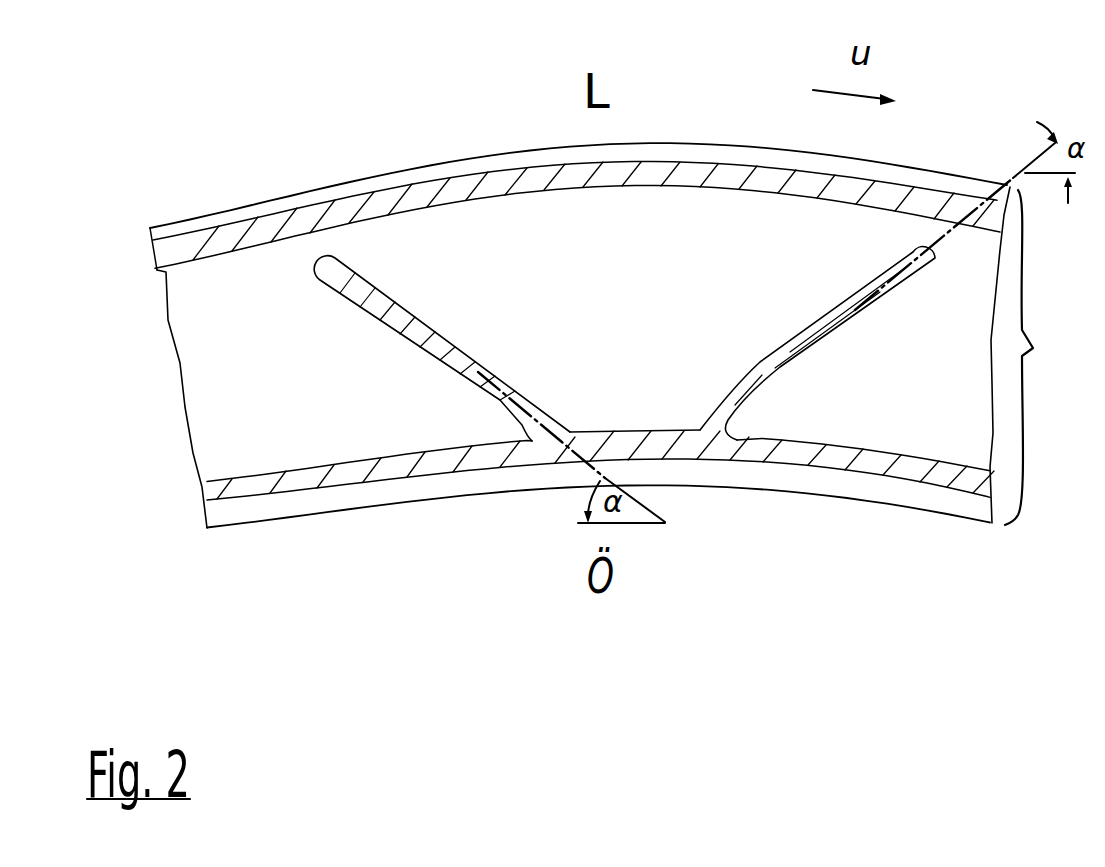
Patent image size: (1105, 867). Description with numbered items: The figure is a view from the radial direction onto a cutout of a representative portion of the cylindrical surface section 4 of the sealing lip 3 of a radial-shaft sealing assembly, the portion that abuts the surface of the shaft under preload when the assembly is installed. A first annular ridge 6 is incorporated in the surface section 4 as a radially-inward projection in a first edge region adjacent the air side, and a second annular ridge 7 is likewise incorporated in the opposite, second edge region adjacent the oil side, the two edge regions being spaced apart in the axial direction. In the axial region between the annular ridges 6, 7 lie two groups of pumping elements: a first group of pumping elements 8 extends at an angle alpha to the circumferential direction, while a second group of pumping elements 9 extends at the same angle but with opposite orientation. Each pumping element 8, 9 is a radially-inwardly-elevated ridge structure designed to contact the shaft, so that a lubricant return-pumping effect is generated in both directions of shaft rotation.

The sealing lip 3 is at (202, 379).
The cylindrical surface section 4 is at (1042, 357).
The first annular ridge 6 is at (173, 250).
The second annular ridge 7 is at (213, 495).
The first group of pumping elements 8 is at (382, 310).
The second group of pumping elements 9 is at (833, 328).